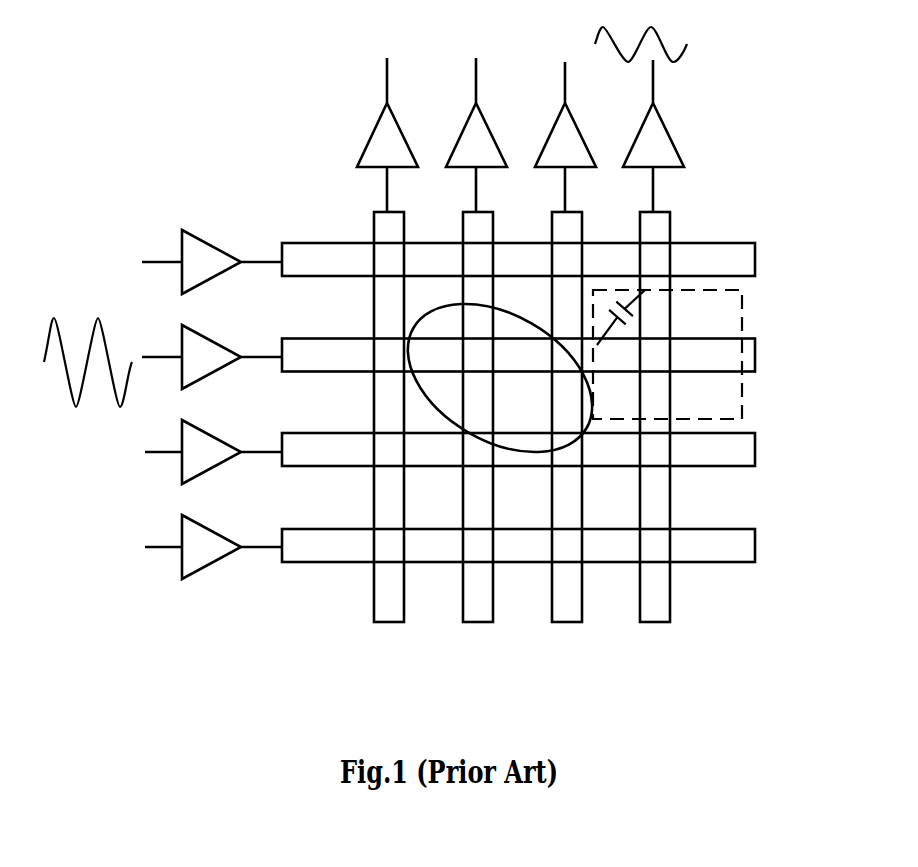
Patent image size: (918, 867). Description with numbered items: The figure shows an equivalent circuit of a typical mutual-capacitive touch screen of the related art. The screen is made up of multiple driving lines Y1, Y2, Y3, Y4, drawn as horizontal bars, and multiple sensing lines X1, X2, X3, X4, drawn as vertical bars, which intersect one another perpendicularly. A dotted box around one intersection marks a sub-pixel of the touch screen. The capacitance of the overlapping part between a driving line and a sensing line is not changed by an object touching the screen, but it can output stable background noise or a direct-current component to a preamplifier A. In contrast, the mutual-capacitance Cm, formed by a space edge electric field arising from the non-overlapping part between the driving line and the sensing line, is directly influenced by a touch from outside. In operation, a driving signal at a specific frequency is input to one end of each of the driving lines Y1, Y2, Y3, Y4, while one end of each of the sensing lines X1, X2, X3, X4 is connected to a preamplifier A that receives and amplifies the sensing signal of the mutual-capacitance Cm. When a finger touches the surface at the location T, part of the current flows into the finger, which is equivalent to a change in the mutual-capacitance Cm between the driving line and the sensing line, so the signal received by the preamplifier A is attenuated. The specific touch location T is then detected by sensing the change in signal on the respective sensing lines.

The preamplifier A is at (652, 155).
The touch location T is at (435, 308).
The mutual-capacitance Cm is at (667, 354).
The driving line Y1 is at (547, 259).
The driving line Y2 is at (547, 355).
The driving line Y3 is at (547, 449).
The driving line Y4 is at (547, 545).
The sensing line X1 is at (388, 441).
The sensing line X2 is at (478, 441).
The sensing line X3 is at (570, 441).
The sensing line X4 is at (659, 441).